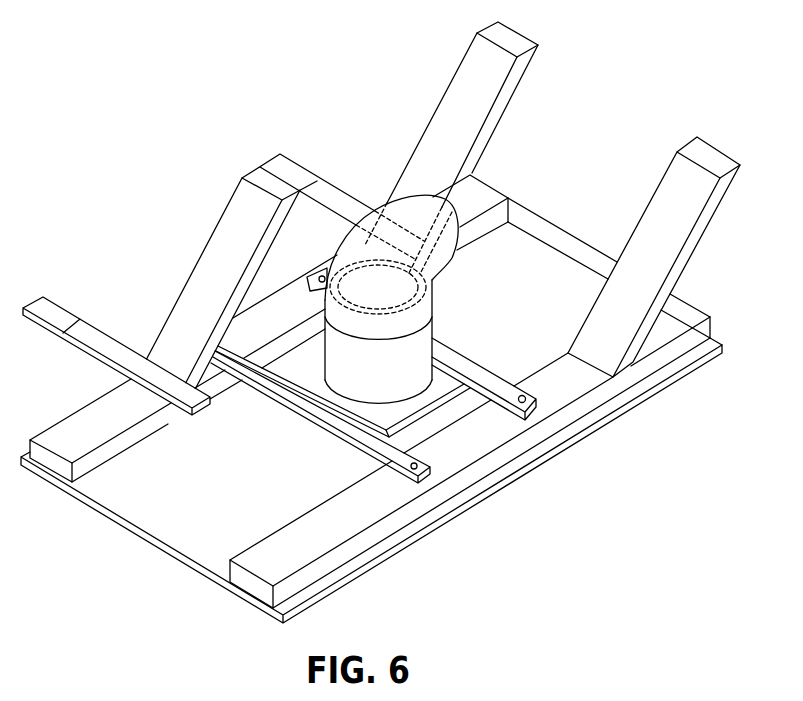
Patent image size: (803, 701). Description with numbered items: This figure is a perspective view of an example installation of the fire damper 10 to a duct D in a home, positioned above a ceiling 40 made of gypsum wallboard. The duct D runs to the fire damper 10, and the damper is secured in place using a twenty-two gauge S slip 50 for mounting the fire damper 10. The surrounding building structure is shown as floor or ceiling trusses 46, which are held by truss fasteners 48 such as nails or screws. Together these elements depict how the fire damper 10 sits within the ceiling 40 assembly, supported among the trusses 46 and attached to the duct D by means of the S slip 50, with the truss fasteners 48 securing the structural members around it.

The fire damper 10 is at (364, 388).
The ceiling 40 is at (163, 545).
The floor or ceiling trusses 46 is at (227, 251).
The truss fasteners 48 is at (522, 396).
The S slip 50 is at (430, 407).
The duct D is at (440, 275).